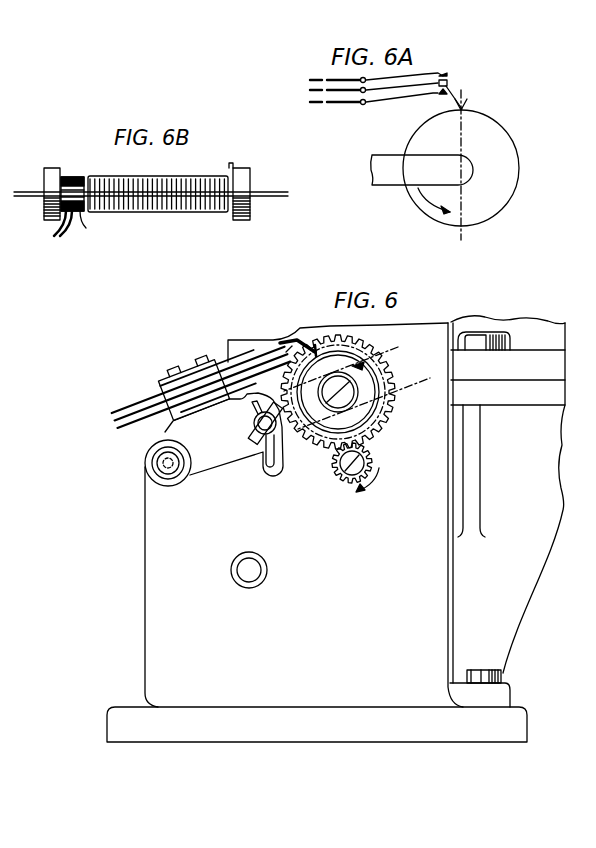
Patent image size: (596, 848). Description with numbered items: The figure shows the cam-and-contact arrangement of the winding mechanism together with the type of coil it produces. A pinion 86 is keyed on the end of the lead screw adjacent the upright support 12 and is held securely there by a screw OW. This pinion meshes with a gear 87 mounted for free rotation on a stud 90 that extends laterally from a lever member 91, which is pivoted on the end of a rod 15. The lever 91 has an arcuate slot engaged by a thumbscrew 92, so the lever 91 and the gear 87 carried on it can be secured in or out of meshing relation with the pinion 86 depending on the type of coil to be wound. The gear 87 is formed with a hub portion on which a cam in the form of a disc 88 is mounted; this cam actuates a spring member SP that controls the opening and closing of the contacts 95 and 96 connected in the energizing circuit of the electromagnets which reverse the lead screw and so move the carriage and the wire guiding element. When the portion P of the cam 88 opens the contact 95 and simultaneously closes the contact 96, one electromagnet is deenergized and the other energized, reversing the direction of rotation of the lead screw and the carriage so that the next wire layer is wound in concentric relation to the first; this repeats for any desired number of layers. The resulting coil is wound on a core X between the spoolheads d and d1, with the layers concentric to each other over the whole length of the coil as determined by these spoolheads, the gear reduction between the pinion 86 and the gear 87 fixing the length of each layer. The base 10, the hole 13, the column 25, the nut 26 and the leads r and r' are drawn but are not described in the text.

In FIG. 6, the base 10 is at (379, 729).
In FIG. 6, the upright support 12 is at (157, 624).
In FIG. 6, the hole 13 is at (250, 573).
In FIG. 6, the rod 15 is at (150, 468).
In FIG. 6, the column 25 is at (537, 394).
In FIG. 6, the nut 26 is at (530, 330).
In FIG. 6, the pinion 86 is at (375, 463).
In FIG. 6, the gear 87 is at (386, 379).
In FIG. 6A, the cam disc 88 is at (514, 169).
In FIG. 6, the cam disc 88 is at (360, 363).
In FIG. 6A, the stud 90 is at (393, 176).
In FIG. 6, the stud 90 is at (347, 398).
In FIG. 6, the lever member 91 is at (230, 451).
In FIG. 6, the thumbscrew 92 is at (295, 430).
In FIG. 6A, the contact 95 is at (446, 76).
In FIG. 6, the contact 95 is at (297, 338).
In FIG. 6A, the contact 96 is at (433, 93).
In FIG. 6, the screw OW is at (350, 476).
In FIG. 6A, the spring member SP is at (461, 100).
In FIG. 6A, the portion of cam P is at (438, 215).
In FIG. 6B, the spoolhead d is at (50, 170).
In FIG. 6B, the spoolhead d1 is at (245, 170).
In FIG. 6B, the core X is at (70, 182).
In FIG. 6B, the lead r is at (58, 231).
In FIG. 6B, the lead r' is at (85, 231).